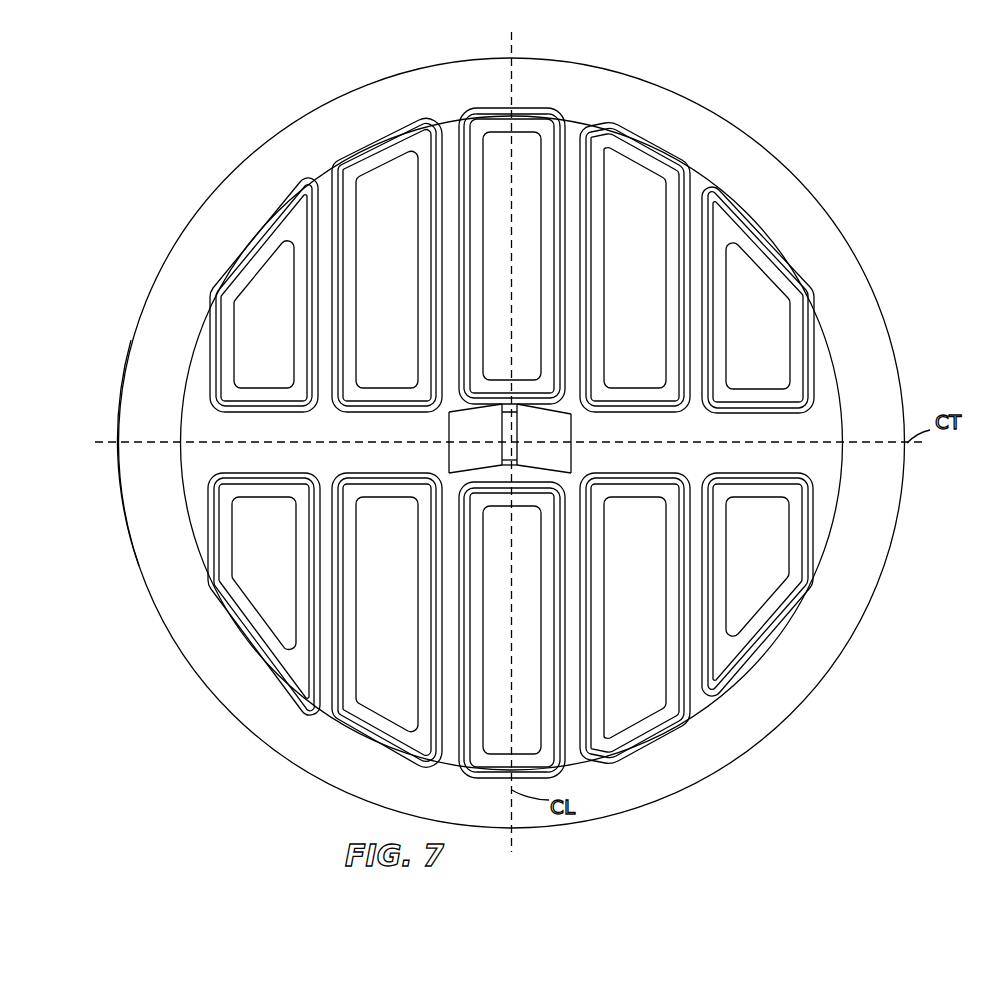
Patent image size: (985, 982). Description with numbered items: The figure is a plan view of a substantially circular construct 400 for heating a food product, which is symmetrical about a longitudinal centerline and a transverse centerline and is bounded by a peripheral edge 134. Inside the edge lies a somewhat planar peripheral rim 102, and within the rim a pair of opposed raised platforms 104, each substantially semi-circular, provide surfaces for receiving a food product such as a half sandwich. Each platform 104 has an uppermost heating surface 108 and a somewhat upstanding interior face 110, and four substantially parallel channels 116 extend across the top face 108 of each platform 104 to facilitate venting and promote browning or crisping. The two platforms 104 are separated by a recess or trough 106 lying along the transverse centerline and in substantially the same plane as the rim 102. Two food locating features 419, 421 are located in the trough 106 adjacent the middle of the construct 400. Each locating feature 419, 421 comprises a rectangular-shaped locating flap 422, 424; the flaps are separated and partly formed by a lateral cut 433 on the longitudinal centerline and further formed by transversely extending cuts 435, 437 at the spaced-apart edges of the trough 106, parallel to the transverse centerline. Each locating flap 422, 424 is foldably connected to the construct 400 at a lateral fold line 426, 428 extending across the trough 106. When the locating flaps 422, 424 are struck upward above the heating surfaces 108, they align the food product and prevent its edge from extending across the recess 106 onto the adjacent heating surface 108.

The construct 400 is at (771, 152).
The peripheral rim or base 102 is at (793, 677).
The peripheral edge 134 is at (138, 566).
The recess 106 is at (401, 454).
The raised portions or platforms 104 is at (477, 173).
The interior face 110 is at (399, 394).
The top surface or face 108 is at (651, 235).
The channels 116 is at (574, 168).
The lateral fold line 426 is at (462, 455).
The lateral fold line 428 is at (573, 440).
The food locating feature 419 is at (492, 410).
The food locating feature 421 is at (541, 410).
The locating flap 422 is at (478, 463).
The locating flap 424 is at (543, 466).
The transversely extending cut 435 is at (511, 405).
The transversely extending cut 437 is at (500, 473).
The lateral cut 433 is at (513, 463).